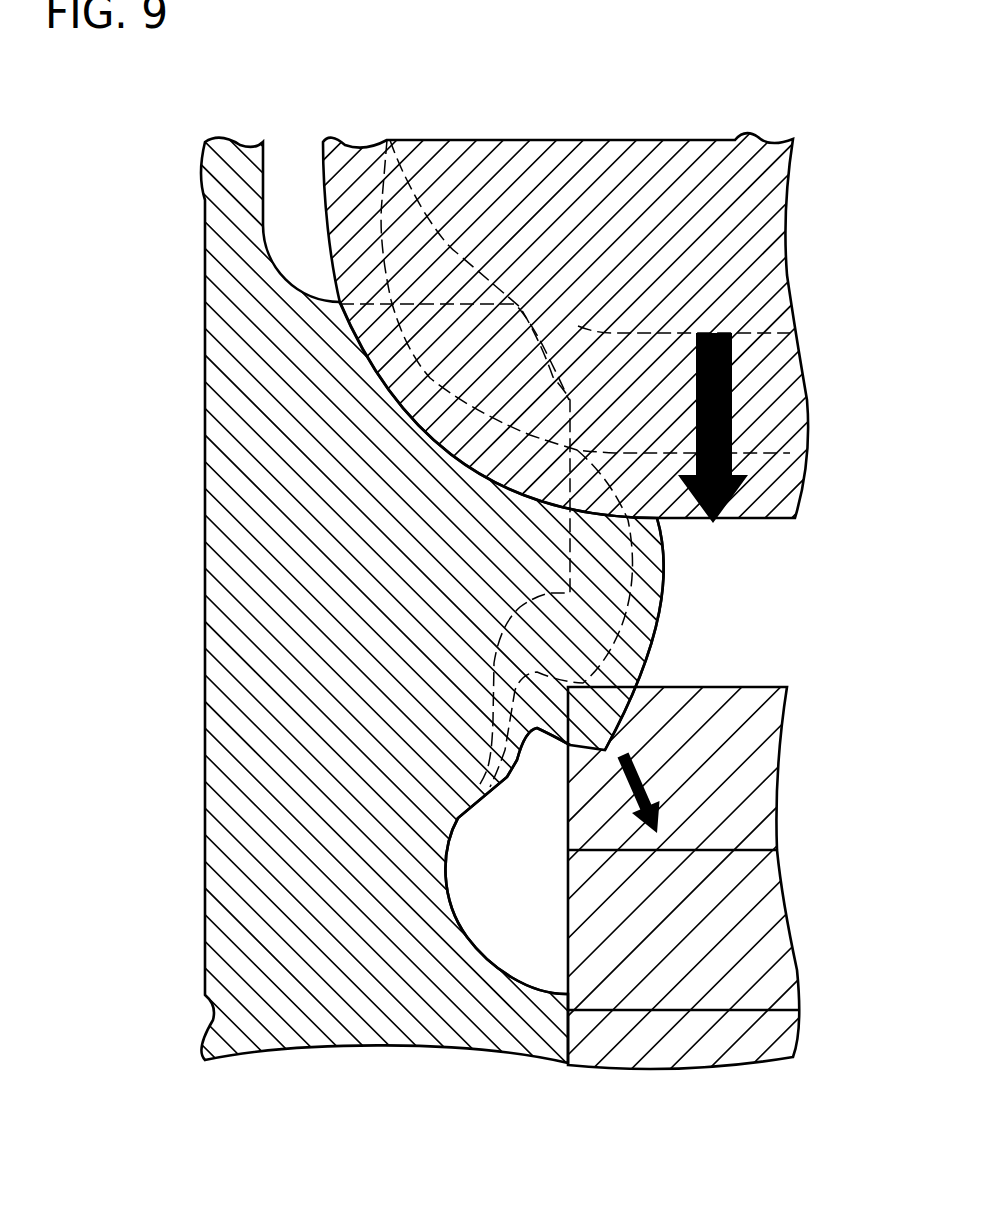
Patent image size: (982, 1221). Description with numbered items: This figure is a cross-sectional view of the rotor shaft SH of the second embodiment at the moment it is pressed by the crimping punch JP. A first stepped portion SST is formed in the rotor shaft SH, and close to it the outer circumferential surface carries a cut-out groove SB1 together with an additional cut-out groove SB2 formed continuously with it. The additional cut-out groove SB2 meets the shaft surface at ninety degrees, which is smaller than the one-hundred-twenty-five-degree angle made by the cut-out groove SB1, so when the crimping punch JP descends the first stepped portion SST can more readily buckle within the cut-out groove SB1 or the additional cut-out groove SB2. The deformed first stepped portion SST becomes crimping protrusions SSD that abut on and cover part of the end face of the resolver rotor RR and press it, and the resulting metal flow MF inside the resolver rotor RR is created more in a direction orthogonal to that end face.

The rotor shaft SH is at (207, 628).
The crimping punch JP is at (560, 138).
The first stepped portion SST is at (388, 136).
The crimping protrusions SSD is at (664, 553).
The resolver rotor RR is at (750, 692).
The metal flow MF is at (663, 787).
The cut-out groove SB1 is at (466, 928).
The additional cut-out groove SB2 is at (508, 772).